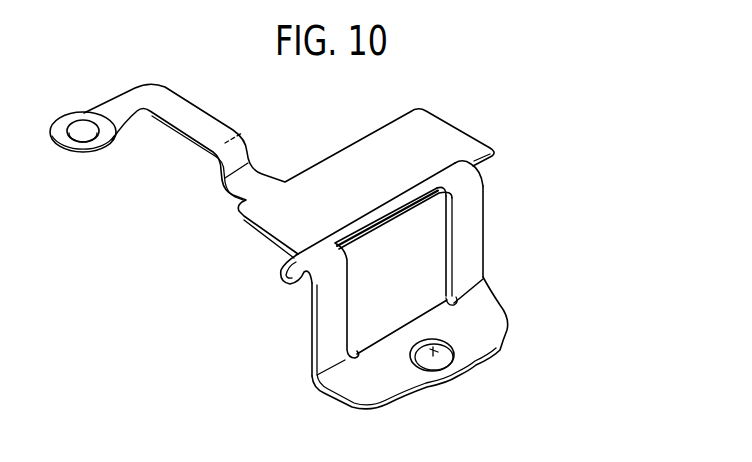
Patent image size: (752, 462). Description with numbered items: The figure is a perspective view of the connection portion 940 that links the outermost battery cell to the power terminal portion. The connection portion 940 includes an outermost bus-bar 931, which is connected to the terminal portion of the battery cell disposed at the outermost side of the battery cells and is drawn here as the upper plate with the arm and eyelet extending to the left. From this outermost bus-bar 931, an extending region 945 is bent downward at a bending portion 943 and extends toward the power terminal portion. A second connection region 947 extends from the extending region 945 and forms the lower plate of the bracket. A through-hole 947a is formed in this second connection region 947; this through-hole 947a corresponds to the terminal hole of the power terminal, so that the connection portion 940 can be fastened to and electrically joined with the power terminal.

The outermost bus-bar 931 is at (447, 143).
The connection portion 940 is at (333, 318).
The bending portion 943 is at (463, 176).
The extending region 945 is at (475, 245).
The second connection region 947 is at (492, 307).
The through-hole 947a is at (438, 352).